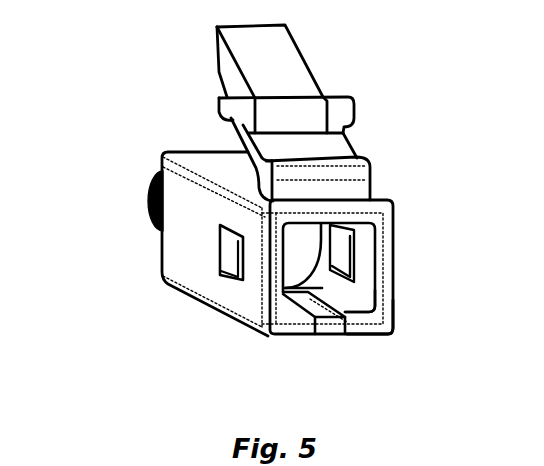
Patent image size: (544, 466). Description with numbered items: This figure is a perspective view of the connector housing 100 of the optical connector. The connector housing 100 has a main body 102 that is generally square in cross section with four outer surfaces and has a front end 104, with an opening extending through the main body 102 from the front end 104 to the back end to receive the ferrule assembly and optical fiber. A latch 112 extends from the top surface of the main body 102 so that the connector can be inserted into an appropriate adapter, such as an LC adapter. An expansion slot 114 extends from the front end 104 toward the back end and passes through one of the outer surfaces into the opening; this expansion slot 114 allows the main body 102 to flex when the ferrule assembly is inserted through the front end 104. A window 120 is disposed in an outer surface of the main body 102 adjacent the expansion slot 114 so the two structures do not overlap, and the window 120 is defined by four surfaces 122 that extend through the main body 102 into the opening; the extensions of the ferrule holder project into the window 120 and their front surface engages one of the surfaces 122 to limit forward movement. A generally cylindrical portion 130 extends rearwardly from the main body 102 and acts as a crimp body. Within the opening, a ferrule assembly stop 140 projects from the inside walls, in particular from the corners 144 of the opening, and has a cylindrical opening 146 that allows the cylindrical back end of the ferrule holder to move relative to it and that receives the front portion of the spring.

The connector housing 100 is at (446, 130).
The main body 102 is at (160, 250).
The front end 104 is at (382, 336).
The latch 112 is at (296, 40).
The expansion slot 114 is at (331, 322).
The window 120 is at (242, 284).
The surfaces 122 is at (228, 256).
The generally cylindrical portion 130 is at (150, 188).
The ferrule assembly stop 140 is at (318, 282).
The corners 144 is at (378, 309).
The cylindrical opening 146 is at (313, 247).